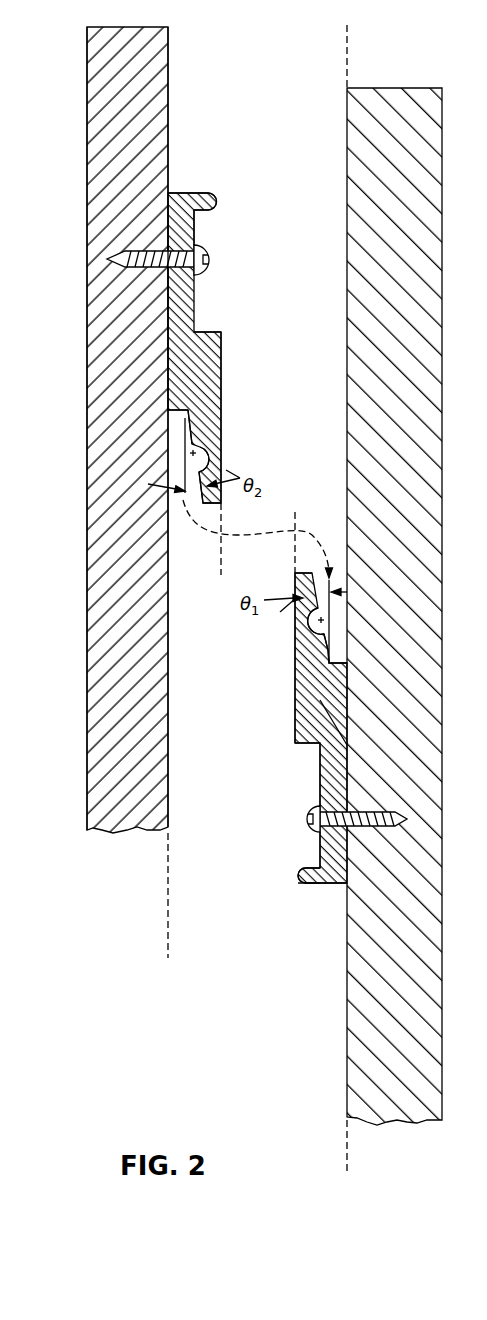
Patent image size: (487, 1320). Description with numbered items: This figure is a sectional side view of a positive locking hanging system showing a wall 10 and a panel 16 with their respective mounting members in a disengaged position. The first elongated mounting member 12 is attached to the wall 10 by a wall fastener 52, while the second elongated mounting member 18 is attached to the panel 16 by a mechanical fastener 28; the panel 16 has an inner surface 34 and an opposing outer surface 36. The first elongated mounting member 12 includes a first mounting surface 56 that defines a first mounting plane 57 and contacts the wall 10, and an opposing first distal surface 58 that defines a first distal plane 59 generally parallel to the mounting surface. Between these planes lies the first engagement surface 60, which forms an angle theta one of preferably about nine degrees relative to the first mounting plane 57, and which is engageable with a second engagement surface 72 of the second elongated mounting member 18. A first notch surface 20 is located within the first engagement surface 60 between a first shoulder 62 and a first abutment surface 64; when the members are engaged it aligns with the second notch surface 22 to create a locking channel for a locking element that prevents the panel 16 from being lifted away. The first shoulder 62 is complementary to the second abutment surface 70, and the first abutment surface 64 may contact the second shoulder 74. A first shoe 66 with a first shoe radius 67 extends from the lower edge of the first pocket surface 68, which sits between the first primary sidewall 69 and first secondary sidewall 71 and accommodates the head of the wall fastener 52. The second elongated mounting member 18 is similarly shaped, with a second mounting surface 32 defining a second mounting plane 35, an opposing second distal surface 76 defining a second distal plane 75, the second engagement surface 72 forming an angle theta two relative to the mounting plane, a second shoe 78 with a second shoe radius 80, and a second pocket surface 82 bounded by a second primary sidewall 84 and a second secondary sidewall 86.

The wall 10 is at (388, 88).
The first elongated mounting member 12 is at (329, 722).
The panel 16 is at (162, 44).
The second elongated mounting member 18 is at (203, 380).
The first notch surface 20 is at (308, 622).
The second notch surface 22 is at (208, 452).
The mechanical fastener 28 is at (137, 250).
The second mounting surface 32 is at (175, 320).
The inner surface 34 is at (168, 87).
The second mounting plane 35 is at (168, 930).
The outer surface 36 is at (87, 90).
The wall fastener 52 is at (398, 811).
The first mounting surface 56 is at (318, 798).
The first mounting plane 57 is at (347, 1138).
The first distal surface 58 is at (295, 650).
The first distal plane 59 is at (296, 522).
The first engagement surface 60 is at (330, 645).
The first shoulder 62 is at (298, 573).
The first abutment surface 64 is at (337, 661).
The first shoe 66 is at (323, 884).
The first shoe radius 67 is at (300, 876).
The first pocket surface 68 is at (320, 768).
The first primary sidewall 69 is at (305, 745).
The second abutment surface 70 is at (178, 412).
The first secondary sidewall 71 is at (306, 864).
The second engagement surface 72 is at (183, 432).
The second shoulder 74 is at (213, 504).
The second distal plane 75 is at (221, 560).
The second distal surface 76 is at (221, 414).
The second shoe 78 is at (190, 193).
The second shoe radius 80 is at (216, 196).
The second pocket surface 82 is at (197, 232).
The second primary sidewall 84 is at (210, 331).
The second secondary sidewall 86 is at (207, 211).